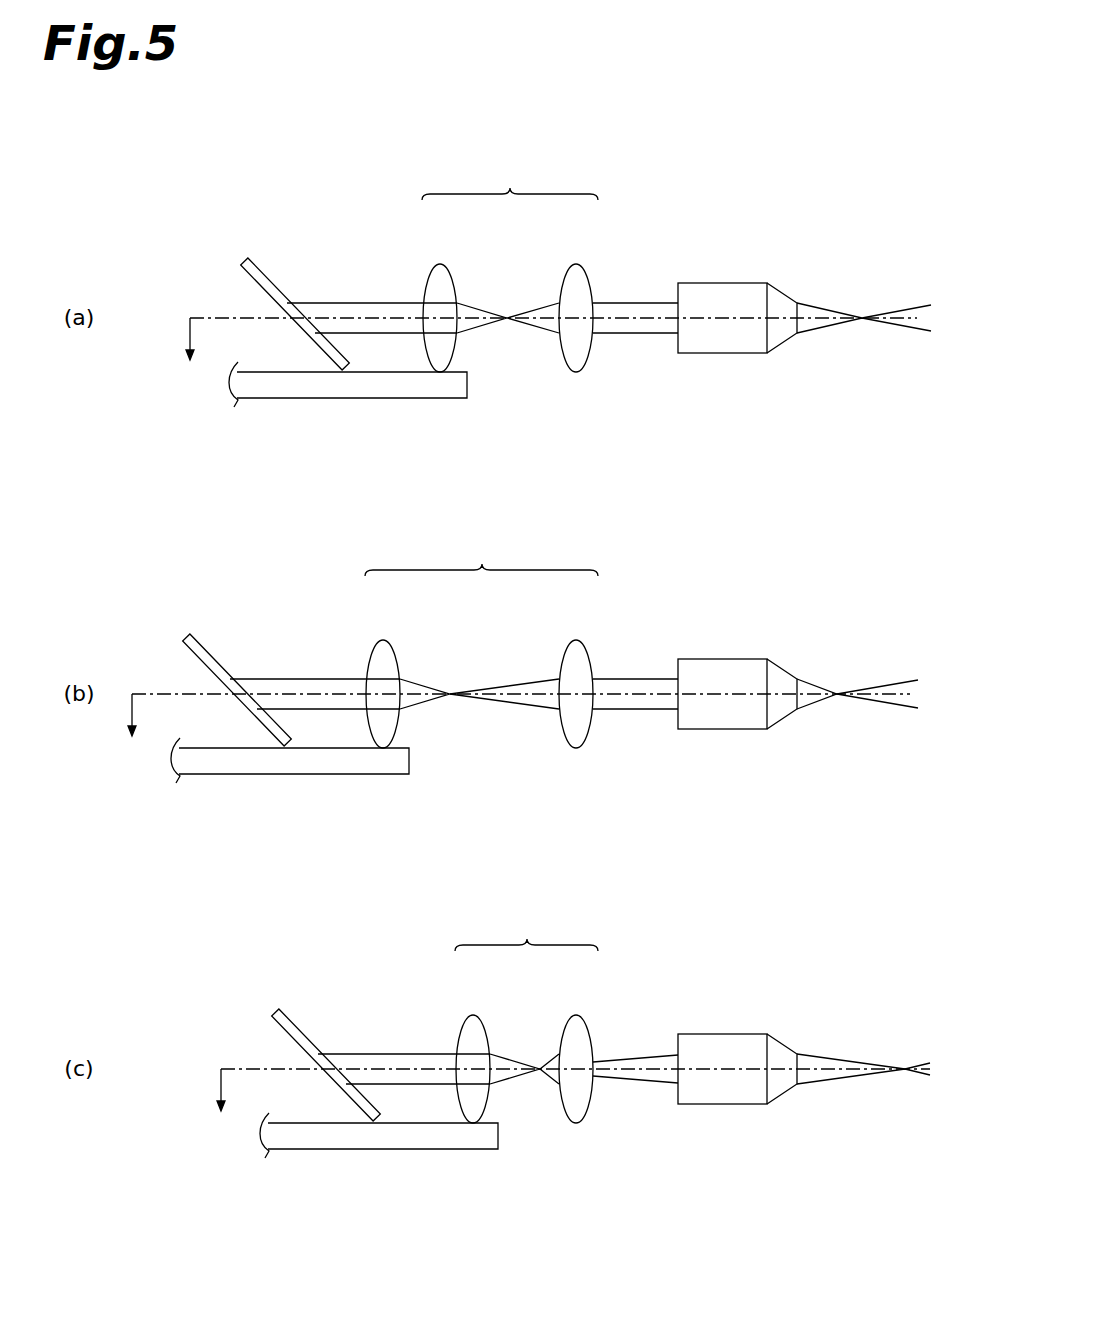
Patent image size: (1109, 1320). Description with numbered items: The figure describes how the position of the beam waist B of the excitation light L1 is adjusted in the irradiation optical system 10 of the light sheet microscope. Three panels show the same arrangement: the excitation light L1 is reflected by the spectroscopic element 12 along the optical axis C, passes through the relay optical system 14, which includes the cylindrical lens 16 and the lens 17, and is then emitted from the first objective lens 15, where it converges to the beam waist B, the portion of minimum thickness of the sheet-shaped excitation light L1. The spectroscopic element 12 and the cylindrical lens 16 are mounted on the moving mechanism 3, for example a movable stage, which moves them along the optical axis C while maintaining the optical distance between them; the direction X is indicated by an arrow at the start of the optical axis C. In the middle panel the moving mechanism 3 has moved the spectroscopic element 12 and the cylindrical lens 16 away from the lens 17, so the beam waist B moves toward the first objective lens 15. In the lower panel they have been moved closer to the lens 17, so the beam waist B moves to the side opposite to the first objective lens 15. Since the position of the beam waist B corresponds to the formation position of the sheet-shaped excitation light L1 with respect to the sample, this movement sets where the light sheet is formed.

The moving mechanism 3 is at (401, 398).
The irradiation optical system 10 is at (661, 186).
The spectroscopic element 12 is at (259, 272).
The relay optical system 14 is at (481, 556).
The first objective lens 15 is at (720, 283).
The cylindrical lens 16 is at (440, 264).
The lens 17 is at (576, 264).
The optical axis C is at (207, 316).
The excitation light L1 is at (370, 302).
The beam waist B is at (863, 306).
The X-axis direction X is at (165, 728).